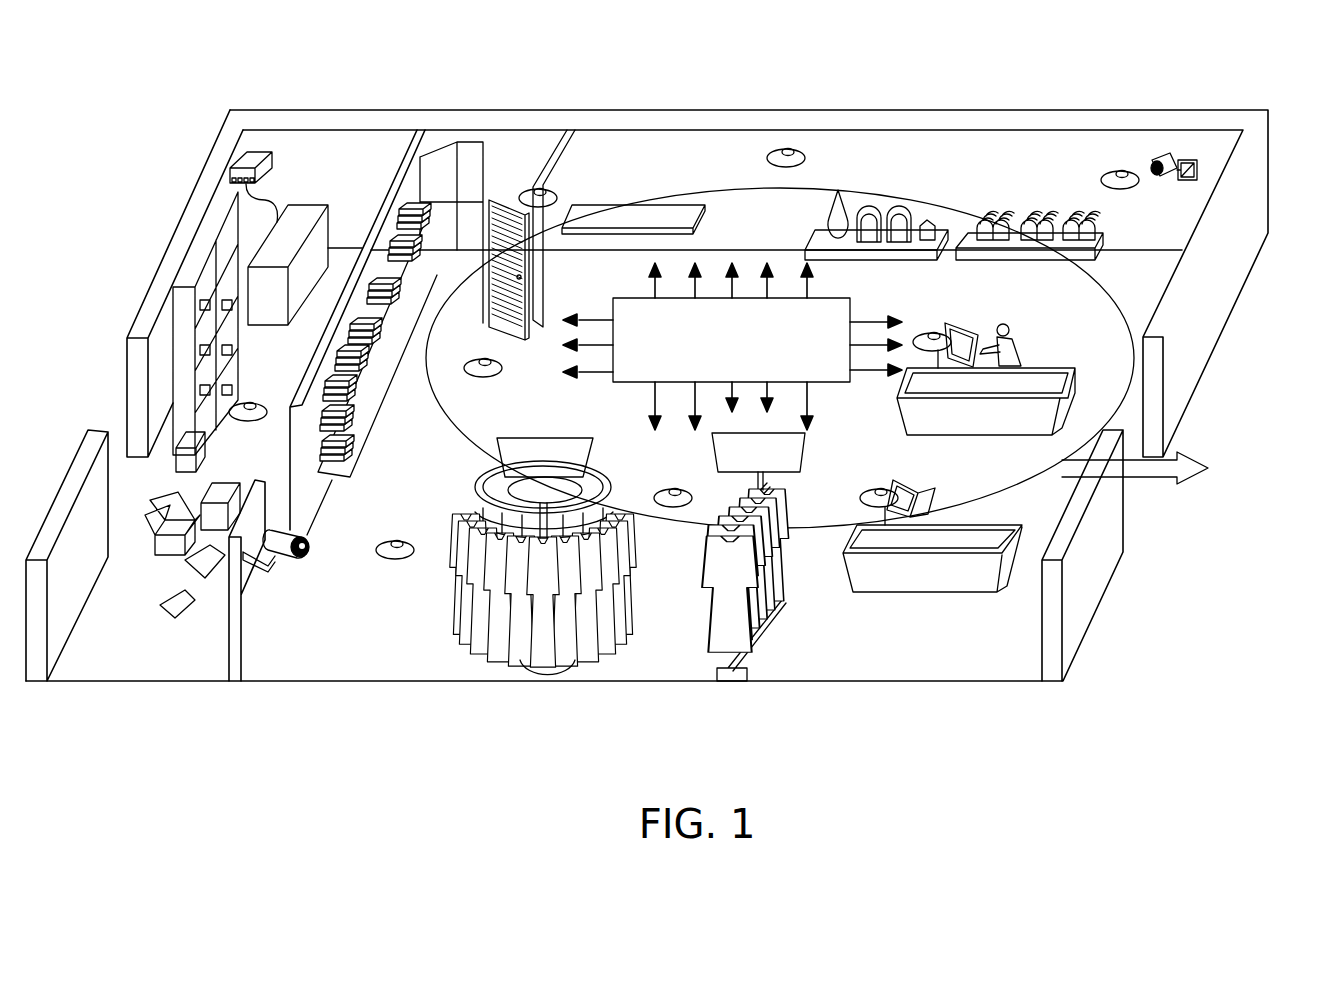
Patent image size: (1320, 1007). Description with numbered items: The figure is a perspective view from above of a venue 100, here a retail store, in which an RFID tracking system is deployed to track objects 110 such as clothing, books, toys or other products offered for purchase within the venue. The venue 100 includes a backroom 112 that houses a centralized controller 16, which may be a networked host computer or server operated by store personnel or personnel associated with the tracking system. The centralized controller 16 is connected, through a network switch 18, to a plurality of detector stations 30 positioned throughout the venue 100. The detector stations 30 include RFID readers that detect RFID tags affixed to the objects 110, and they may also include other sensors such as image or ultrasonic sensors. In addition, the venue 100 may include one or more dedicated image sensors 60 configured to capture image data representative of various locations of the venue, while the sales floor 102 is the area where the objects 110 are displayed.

The venue 100 is at (160, 92).
The network switch 18 is at (262, 152).
The centralized controller 16 is at (310, 203).
The detector station 30 is at (248, 421).
The object 110 is at (373, 420).
The dedicated image sensor 60 is at (1170, 150).
The sales floor 102 is at (975, 681).
The backroom 112 is at (148, 680).